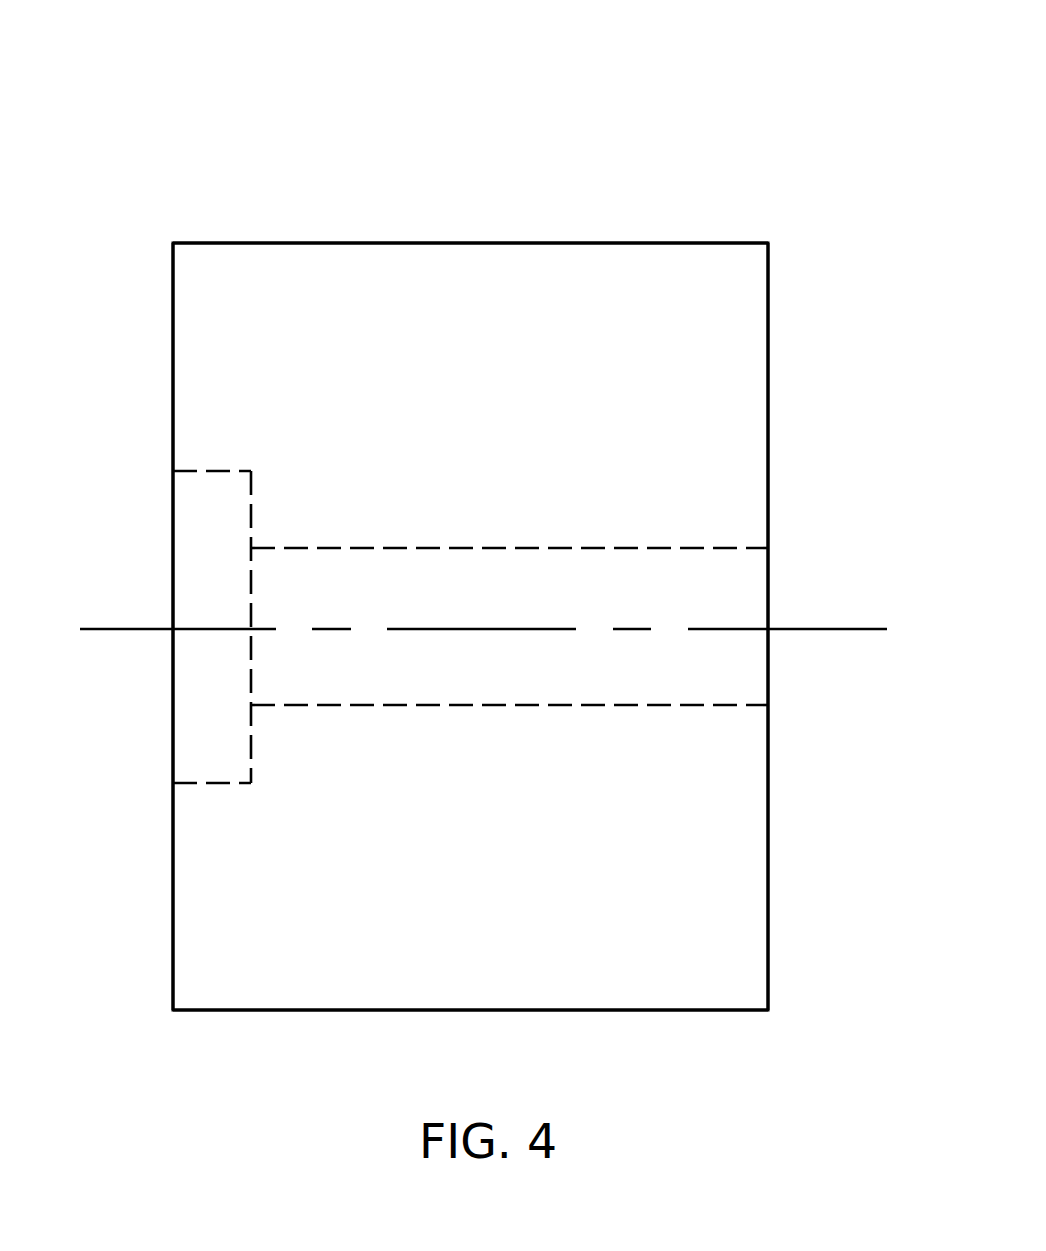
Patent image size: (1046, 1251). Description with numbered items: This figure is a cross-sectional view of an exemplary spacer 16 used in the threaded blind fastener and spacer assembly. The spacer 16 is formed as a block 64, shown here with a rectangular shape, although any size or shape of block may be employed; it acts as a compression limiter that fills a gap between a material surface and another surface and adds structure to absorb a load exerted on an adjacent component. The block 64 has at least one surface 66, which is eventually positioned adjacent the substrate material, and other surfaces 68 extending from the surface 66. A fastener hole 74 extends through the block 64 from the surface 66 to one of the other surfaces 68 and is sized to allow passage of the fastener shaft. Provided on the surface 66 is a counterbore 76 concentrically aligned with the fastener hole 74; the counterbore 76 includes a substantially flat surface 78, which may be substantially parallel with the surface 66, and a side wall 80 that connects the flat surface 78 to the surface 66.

The spacer 16 is at (738, 120).
The block 64 is at (713, 208).
The surface 66 is at (173, 357).
The other surfaces 68 is at (449, 243).
The fastener hole 74 is at (693, 602).
The counterbore 76 is at (212, 546).
The flat surface 78 is at (250, 705).
The side wall 80 is at (195, 747).